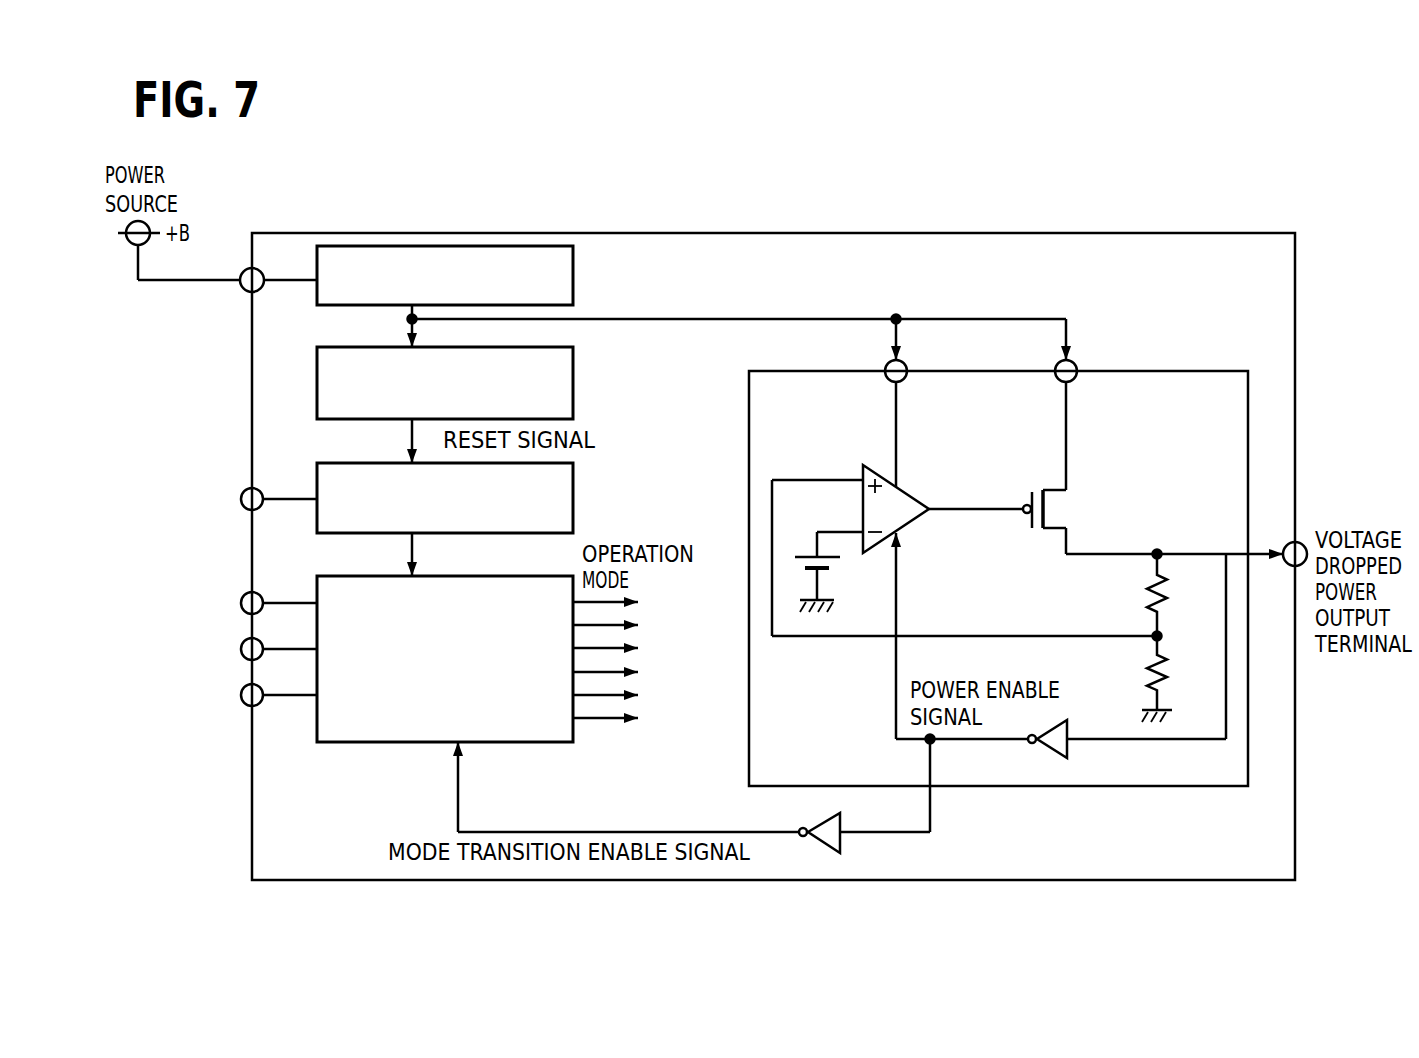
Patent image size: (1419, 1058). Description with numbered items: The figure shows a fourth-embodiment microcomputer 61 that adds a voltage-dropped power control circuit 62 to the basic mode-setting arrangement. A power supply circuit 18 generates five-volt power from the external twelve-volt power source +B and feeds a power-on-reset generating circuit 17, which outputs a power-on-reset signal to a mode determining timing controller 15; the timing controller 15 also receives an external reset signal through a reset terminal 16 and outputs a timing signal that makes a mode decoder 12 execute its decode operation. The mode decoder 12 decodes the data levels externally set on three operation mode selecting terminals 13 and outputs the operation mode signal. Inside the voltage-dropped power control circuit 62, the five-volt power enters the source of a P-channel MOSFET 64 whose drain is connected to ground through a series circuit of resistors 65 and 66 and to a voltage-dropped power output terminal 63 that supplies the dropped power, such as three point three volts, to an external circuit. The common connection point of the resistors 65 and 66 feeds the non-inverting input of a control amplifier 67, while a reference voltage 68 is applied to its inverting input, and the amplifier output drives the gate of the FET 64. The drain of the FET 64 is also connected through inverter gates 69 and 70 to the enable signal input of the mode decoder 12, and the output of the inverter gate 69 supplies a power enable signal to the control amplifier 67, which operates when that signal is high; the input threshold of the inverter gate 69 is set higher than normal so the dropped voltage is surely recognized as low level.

The mode decoder 12 is at (512, 743).
The operation mode selecting terminals 13 is at (233, 618).
The mode determining timing controller 15 is at (575, 479).
The reset terminal 16 is at (242, 488).
The power-on-reset generating circuit 17 is at (575, 382).
The power supply circuit 18 is at (575, 279).
The microcomputer 61 is at (556, 232).
The voltage-dropped power control circuit 62 is at (1128, 371).
The voltage-dropped power output terminal 63 is at (1302, 543).
The P-channel MOSFET 64 is at (1070, 512).
The resistor 65 is at (1146, 598).
The resistor 66 is at (1147, 678).
The control amplifier 67 is at (909, 482).
The reference voltage 68 is at (836, 562).
The inverter gate 69 is at (1069, 752).
The inverter gate 70 is at (842, 845).